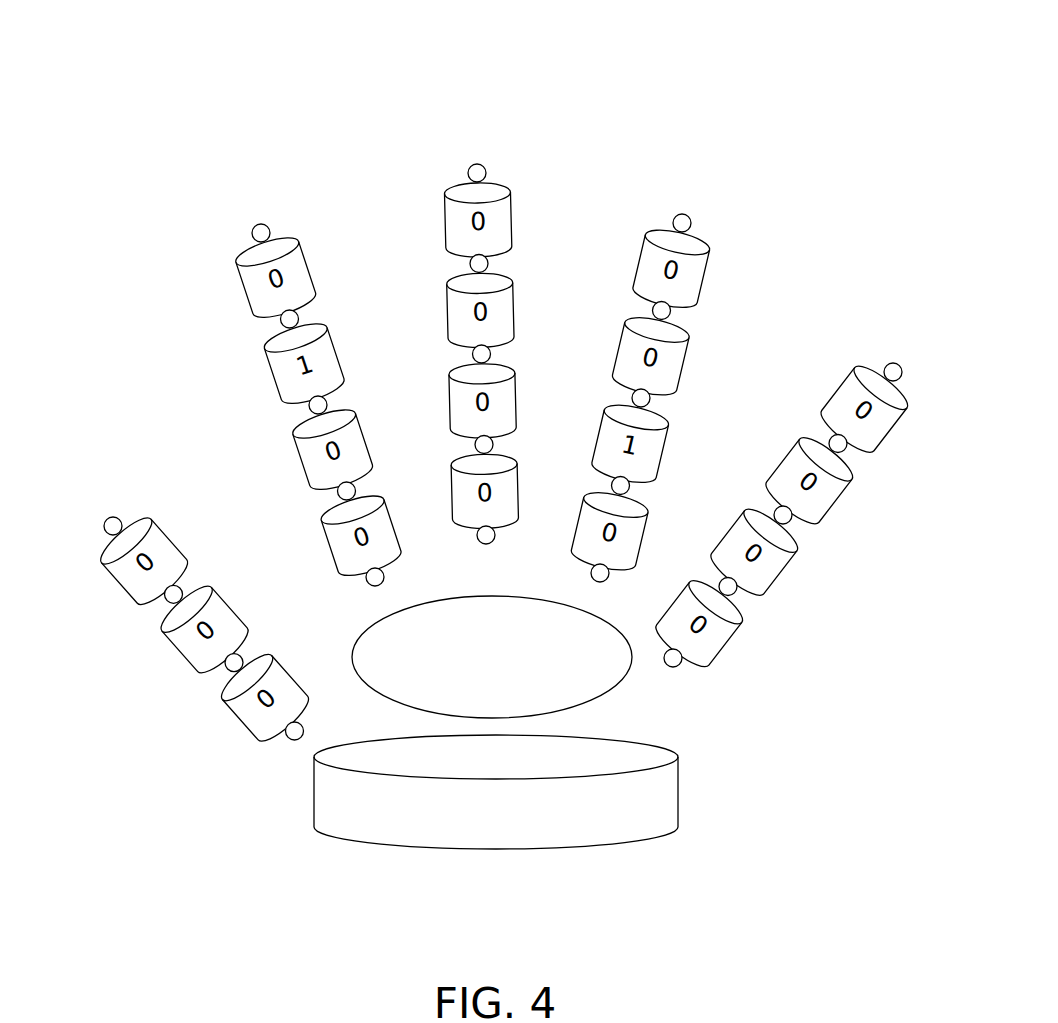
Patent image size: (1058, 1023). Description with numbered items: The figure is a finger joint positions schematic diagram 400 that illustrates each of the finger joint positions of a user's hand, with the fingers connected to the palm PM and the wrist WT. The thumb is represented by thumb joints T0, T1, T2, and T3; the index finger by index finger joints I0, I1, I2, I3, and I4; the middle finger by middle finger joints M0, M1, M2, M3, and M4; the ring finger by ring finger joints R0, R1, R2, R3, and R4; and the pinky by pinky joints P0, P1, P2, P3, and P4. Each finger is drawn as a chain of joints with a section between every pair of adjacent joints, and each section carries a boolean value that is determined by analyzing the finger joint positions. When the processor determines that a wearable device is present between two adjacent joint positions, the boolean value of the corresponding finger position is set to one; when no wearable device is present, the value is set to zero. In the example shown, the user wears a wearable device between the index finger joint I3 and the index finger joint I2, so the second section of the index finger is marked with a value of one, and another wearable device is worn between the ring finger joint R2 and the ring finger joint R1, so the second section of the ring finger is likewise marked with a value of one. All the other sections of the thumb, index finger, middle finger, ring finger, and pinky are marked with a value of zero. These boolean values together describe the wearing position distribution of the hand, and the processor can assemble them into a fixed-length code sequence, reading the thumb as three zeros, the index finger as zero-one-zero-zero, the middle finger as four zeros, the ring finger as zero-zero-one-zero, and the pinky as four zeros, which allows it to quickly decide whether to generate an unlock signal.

The finger joint positions schematic diagram 400 is at (477, 115).
The thumb joint T0 is at (283, 742).
The thumb joint T1 is at (220, 678).
The thumb joint T2 is at (158, 610).
The thumb joint T3 is at (100, 536).
The index finger joint I0 is at (356, 587).
The index finger joint I1 is at (326, 501).
The index finger joint I2 is at (298, 416).
The index finger joint I3 is at (268, 330).
The index finger joint I4 is at (240, 244).
The middle finger joint M0 is at (472, 532).
The middle finger joint M1 is at (470, 447).
The middle finger joint M2 is at (465, 356).
The middle finger joint M3 is at (457, 265).
The middle finger joint M4 is at (455, 168).
The ring finger joint R0 is at (614, 580).
The ring finger joint R1 is at (637, 490).
The ring finger joint R2 is at (655, 404).
The ring finger joint R3 is at (675, 316).
The ring finger joint R4 is at (696, 228).
The pinky joint P0 is at (688, 671).
The pinky joint P1 is at (741, 596).
The pinky joint P2 is at (796, 523).
The pinky joint P3 is at (848, 451).
The pinky joint P4 is at (907, 383).
The palm PM is at (492, 657).
The wrist WT is at (496, 792).